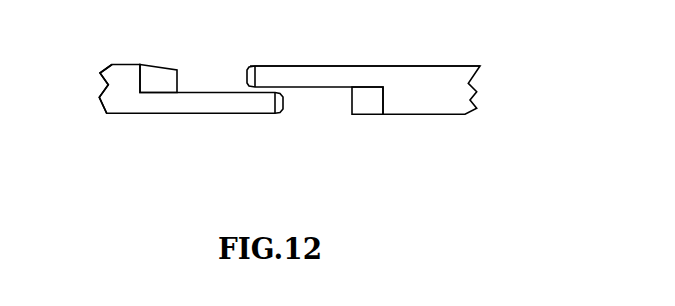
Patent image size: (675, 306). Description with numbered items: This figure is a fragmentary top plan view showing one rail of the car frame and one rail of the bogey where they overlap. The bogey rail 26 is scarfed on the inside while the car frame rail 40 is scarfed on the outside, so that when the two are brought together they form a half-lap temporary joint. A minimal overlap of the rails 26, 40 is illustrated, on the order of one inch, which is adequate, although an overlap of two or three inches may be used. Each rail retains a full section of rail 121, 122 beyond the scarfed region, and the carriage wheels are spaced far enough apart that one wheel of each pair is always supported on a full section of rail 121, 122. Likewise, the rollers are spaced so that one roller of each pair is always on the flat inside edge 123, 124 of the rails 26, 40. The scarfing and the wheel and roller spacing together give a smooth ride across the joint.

The full section of rail 121 is at (123, 108).
The rail 26 is at (136, 66).
The flat inside edge 123 is at (122, 64).
The rail 40 is at (392, 73).
The flat inside edge 124 is at (278, 66).
The full section of rail 122 is at (437, 108).